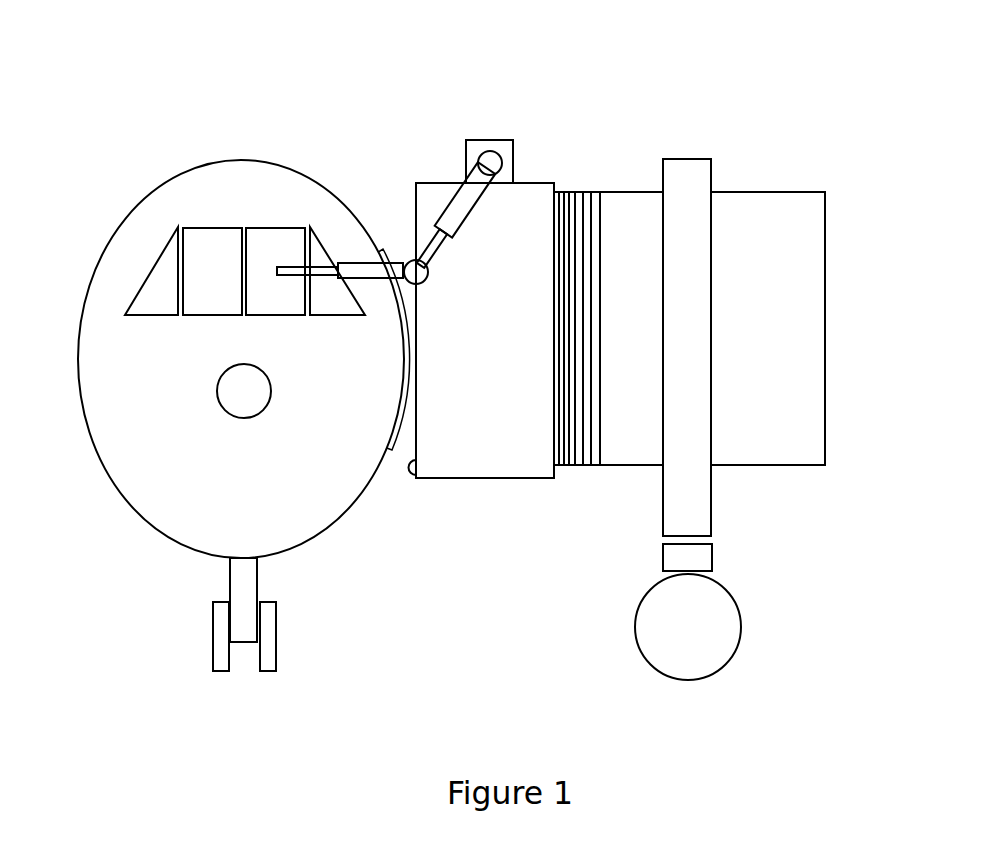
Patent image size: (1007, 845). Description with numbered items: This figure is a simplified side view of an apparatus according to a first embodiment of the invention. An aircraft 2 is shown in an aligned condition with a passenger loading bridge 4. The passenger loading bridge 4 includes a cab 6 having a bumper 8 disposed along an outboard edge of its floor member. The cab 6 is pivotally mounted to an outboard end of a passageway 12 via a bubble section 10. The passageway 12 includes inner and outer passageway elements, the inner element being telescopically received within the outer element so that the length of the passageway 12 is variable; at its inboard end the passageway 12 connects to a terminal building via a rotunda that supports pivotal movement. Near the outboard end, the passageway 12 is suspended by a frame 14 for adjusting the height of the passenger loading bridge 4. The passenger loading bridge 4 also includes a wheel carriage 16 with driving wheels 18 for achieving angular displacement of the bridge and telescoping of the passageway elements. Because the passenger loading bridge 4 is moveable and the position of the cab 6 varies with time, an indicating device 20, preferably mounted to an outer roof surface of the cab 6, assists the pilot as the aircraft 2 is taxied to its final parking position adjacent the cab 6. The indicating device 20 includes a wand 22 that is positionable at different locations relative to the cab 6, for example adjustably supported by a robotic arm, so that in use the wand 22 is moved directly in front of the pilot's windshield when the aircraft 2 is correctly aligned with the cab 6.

The aircraft 2 is at (74, 206).
The passenger loading bridge 4 is at (618, 106).
The cab 6 is at (482, 462).
The bumper 8 is at (408, 478).
The bubble section 10 is at (580, 190).
The passageway 12 is at (747, 196).
The frame 14 is at (692, 160).
The wheel carriage 16 is at (713, 555).
The driving wheels 18 is at (742, 624).
The indicating device 20 is at (534, 81).
The wand 22 is at (280, 267).